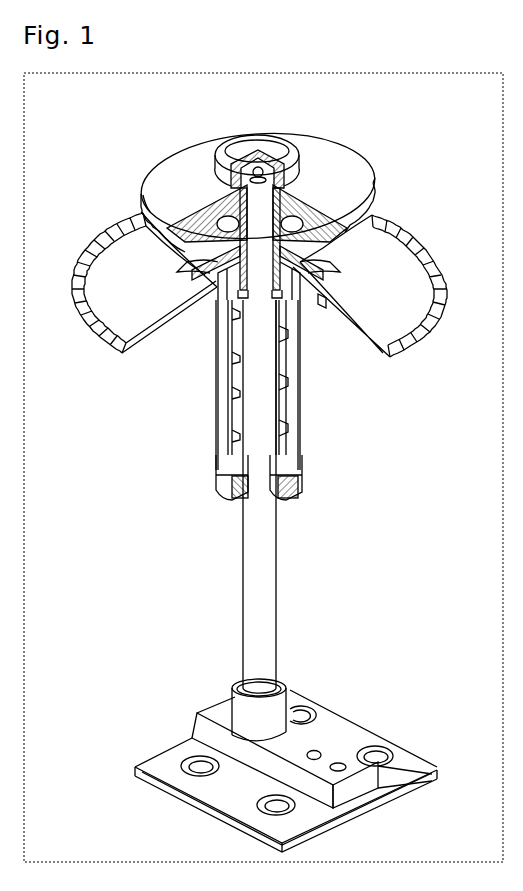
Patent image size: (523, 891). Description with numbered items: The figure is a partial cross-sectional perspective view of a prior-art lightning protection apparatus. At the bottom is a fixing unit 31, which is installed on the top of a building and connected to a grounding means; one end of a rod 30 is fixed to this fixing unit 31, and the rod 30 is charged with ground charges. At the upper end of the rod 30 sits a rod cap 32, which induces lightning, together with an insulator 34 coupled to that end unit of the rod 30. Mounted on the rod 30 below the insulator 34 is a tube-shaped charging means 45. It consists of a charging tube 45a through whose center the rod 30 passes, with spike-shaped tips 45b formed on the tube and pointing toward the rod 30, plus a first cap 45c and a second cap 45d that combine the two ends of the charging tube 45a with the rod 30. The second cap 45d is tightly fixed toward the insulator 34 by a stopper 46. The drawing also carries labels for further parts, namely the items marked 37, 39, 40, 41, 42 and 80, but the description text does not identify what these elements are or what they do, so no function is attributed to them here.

The rod 30 is at (265, 555).
The fixing unit 31 is at (347, 727).
The rod cap 32 is at (268, 140).
The insulator 34 is at (337, 165).
The right blade 37 is at (405, 275).
The hub sleeve 39 is at (305, 292).
The connecting arm 40 is at (303, 318).
The left blade 41 is at (200, 262).
The blade lower edge 42 is at (122, 345).
The charging means 45 is at (330, 420).
The charging tube 45a is at (218, 430).
The tips 45b is at (232, 395).
The first cap 45c is at (240, 345).
The second cap 45d is at (226, 492).
The stopper 46 is at (238, 503).
The clamp 80 is at (217, 280).